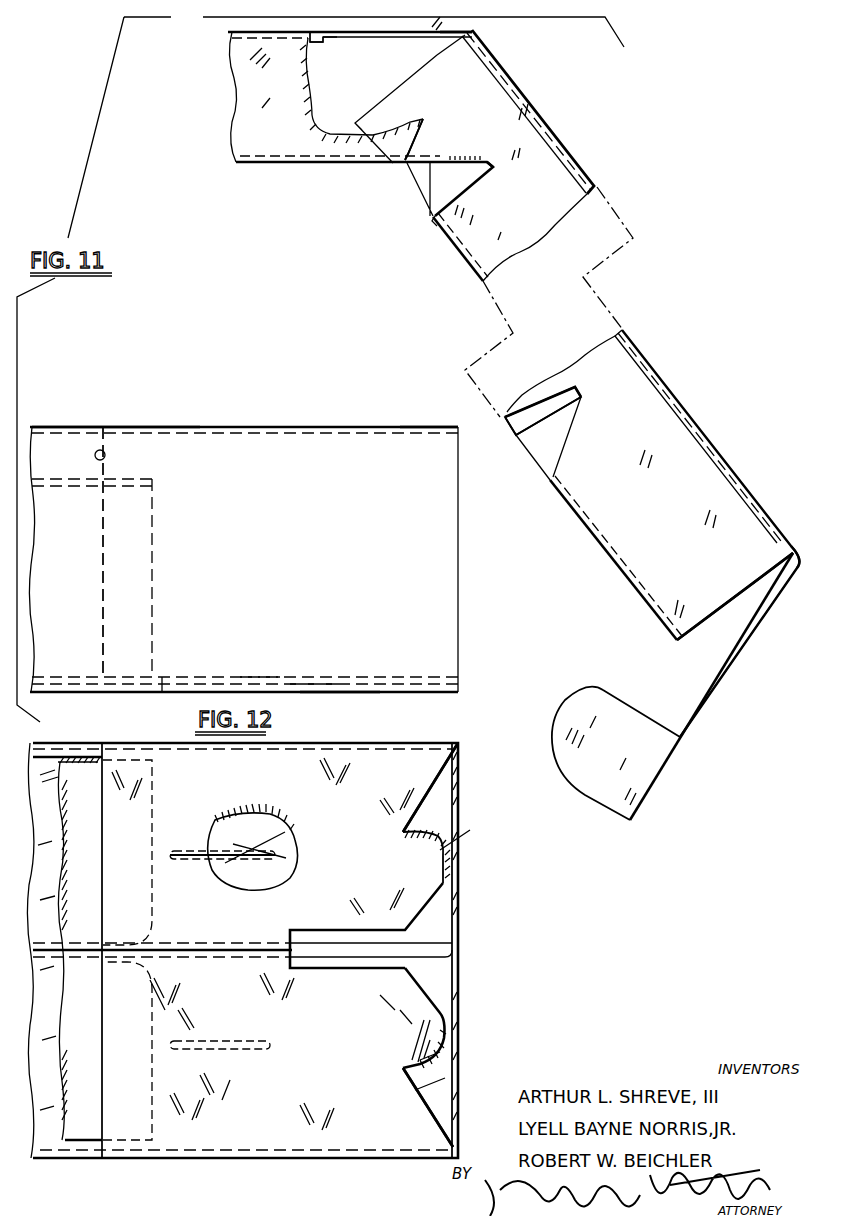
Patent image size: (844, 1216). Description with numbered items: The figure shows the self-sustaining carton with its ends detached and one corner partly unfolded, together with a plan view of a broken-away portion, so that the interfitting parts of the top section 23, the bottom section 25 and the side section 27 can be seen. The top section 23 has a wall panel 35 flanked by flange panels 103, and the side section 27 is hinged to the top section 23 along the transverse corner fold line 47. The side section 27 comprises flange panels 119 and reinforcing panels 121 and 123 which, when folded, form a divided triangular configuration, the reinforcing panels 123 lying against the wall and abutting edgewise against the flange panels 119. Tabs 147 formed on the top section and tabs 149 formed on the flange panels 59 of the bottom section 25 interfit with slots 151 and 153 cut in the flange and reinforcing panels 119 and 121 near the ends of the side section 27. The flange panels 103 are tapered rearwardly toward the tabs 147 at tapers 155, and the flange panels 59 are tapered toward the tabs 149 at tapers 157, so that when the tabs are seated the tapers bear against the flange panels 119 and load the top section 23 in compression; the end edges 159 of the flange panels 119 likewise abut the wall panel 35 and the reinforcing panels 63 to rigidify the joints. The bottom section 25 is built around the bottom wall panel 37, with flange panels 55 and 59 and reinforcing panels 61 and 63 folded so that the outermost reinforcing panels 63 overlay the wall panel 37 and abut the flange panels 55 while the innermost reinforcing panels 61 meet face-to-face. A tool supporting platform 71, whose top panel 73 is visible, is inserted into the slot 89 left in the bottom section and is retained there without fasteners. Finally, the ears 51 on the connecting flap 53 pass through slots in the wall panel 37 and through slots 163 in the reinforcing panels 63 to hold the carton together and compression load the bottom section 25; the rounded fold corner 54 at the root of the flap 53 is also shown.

In FIG. 11, the top section 23 is at (246, 28).
In FIG. 11, the bottom section 25 is at (141, 425).
In FIG. 12, the bottom section 25 is at (380, 1162).
In FIG. 11, the side section 27 is at (576, 164).
In FIG. 11, the wall panel 35 is at (343, 38).
In FIG. 11, the bottom wall panel 37 is at (336, 693).
In FIG. 12, the bottom wall panel 37 is at (458, 989).
In FIG. 11, the transverse fold line 47 is at (474, 30).
In FIG. 11, the projecting ear 51 is at (620, 782).
In FIG. 11, the connecting flap 53 is at (702, 704).
In FIG. 11, the fold corner 54 is at (799, 565).
In FIG. 11, the flange panel 55 is at (281, 567).
In FIG. 12, the flange panel 55 is at (120, 750).
In FIG. 11, the outermost flange panel 59 is at (69, 427).
In FIG. 12, the outermost flange panel 59 is at (266, 797).
In FIG. 12, the innermost reinforcing panel 61 is at (52, 950).
In FIG. 11, the outermost reinforcing panel 63 is at (310, 681).
In FIG. 12, the outermost reinforcing panel 63 is at (280, 880).
In FIG. 11, the tool supporting platform 71 is at (72, 475).
In FIG. 12, the tool supporting platform 71 is at (153, 813).
In FIG. 12, the top panel 73 is at (85, 1026).
In FIG. 11, the slot 89 is at (107, 461).
In FIG. 12, the slot 89 is at (45, 763).
In FIG. 11, the flange panel 103 is at (258, 112).
In FIG. 11, the flange panel 119 is at (480, 246).
In FIG. 11, the reinforcing panel 121 is at (556, 444).
In FIG. 11, the reinforcing panel 123 is at (716, 457).
In FIG. 11, the tab 147 is at (433, 214).
In FIG. 11, the tab 149 is at (449, 428).
In FIG. 12, the tab 149 is at (418, 860).
In FIG. 11, the slot 151 is at (476, 167).
In FIG. 11, the slot 153 is at (543, 417).
In FIG. 11, the taper 155 is at (406, 156).
In FIG. 12, the taper 157 is at (420, 822).
In FIG. 11, the end edge 159 is at (718, 620).
In FIG. 11, the slot 163 is at (259, 682).
In FIG. 12, the slot 163 is at (250, 855).